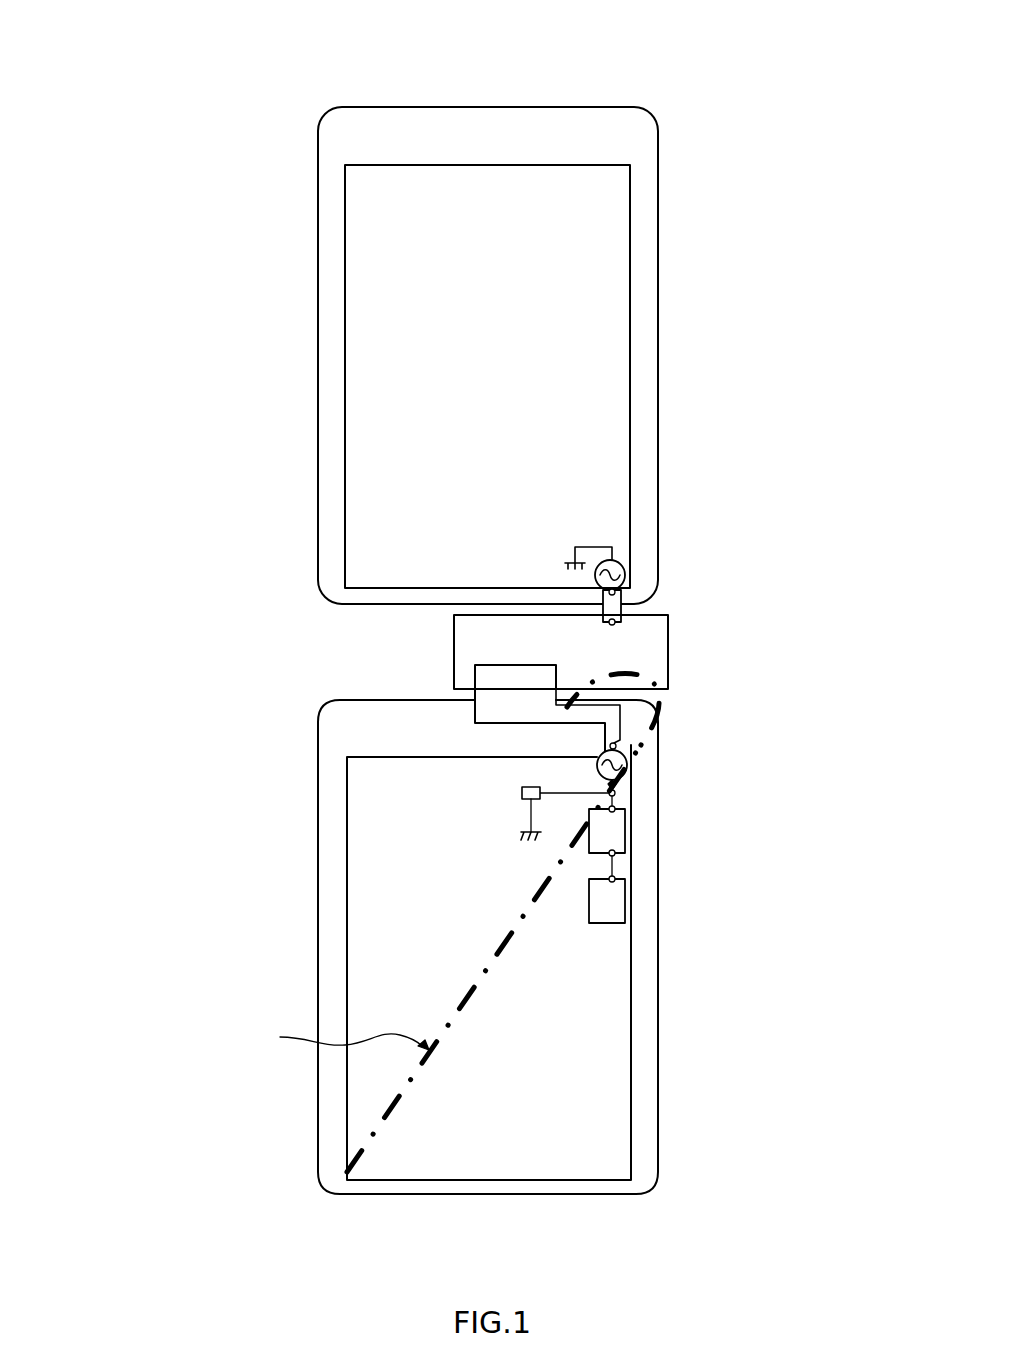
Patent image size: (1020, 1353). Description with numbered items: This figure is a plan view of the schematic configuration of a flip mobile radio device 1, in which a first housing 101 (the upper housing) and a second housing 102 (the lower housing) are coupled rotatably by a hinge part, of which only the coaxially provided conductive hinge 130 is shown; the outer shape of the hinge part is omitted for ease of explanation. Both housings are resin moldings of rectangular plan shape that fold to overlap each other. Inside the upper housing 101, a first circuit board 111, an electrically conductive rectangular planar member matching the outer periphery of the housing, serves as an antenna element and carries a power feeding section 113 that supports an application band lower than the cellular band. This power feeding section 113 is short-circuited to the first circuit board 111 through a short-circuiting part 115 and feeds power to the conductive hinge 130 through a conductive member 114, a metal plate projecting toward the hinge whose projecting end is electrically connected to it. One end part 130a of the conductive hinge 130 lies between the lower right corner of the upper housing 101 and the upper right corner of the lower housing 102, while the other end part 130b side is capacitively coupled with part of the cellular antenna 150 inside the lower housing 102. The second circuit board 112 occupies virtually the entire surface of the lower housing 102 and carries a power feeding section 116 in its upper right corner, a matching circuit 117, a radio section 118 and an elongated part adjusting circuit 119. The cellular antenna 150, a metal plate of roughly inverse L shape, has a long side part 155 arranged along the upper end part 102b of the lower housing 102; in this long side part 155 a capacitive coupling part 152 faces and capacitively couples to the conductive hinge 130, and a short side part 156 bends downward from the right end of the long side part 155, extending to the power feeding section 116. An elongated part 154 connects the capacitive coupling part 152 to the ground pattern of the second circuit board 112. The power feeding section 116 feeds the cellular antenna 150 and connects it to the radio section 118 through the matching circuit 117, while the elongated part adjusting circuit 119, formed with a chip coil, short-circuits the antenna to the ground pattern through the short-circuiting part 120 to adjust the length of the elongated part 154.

The portable wireless device 1 is at (800, 1).
The first housing 101 is at (638, 150).
The first circuit board 111 is at (605, 228).
The power feeding section 113 is at (620, 558).
The conductive member 114 is at (625, 604).
The short-circuiting part 115 is at (593, 545).
The conductive hinge 130 is at (645, 659).
The one end part 130a is at (642, 630).
The other end part 130b is at (468, 632).
The capacitive coupling part 152 is at (487, 668).
The cellular antenna 150 is at (474, 712).
The second housing 102 is at (643, 1073).
The upper end part 102b is at (320, 732).
The second circuit board 112 is at (382, 912).
The power feeding section 116 is at (626, 778).
The matching circuit 117 is at (618, 836).
The radio section 118 is at (618, 908).
The elongated part adjusting circuit 119 is at (522, 792).
The short-circuiting part 120 is at (522, 832).
The elongated part 154 is at (422, 923).
The long side part 155 is at (578, 714).
The short side part 156 is at (613, 732).